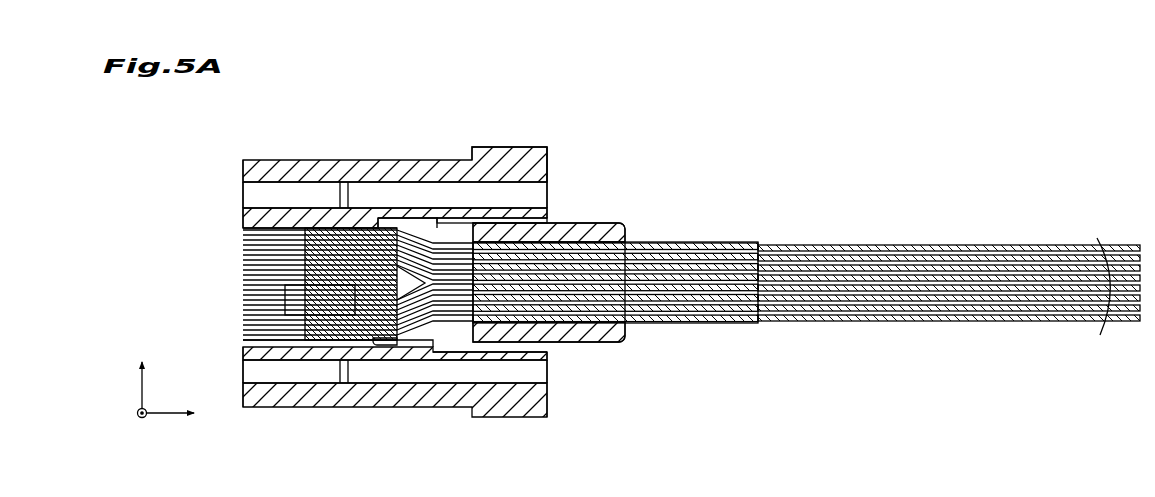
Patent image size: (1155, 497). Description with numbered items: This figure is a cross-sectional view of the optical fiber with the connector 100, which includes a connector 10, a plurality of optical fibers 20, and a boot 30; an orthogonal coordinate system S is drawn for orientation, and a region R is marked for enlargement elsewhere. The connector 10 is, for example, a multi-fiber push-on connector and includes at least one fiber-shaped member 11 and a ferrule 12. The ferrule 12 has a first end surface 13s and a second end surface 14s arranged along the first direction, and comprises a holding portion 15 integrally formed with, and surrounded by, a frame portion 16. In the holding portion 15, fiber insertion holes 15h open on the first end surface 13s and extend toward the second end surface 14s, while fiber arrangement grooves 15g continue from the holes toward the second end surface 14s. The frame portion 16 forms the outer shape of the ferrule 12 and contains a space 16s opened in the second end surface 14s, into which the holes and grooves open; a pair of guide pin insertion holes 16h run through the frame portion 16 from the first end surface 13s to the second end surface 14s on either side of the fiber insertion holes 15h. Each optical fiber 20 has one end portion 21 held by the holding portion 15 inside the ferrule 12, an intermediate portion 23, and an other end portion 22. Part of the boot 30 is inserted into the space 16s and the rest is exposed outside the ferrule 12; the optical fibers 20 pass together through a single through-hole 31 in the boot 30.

The optical fiber with the connector 100 is at (1037, 145).
The connector 10 is at (427, 134).
The fiber-shaped member 11 is at (243, 298).
The ferrule 12 is at (509, 149).
The first end surface 13s is at (243, 163).
The second end surface 14s is at (548, 165).
The holding portion 15 is at (357, 213).
The fiber arrangement groove 15g is at (373, 228).
The fiber insertion hole 15h is at (243, 237).
The frame portion 16 is at (447, 165).
The guide pin insertion hole 16h is at (290, 183).
The space 16s is at (457, 338).
The optical fiber 20 is at (1100, 236).
The one end portion 21 is at (413, 338).
The other end portion 22 is at (912, 236).
The intermediate portion 23 is at (697, 233).
The boot 30 is at (598, 333).
The through-hole 31 is at (602, 253).
The region R is at (335, 338).
The orthogonal coordinate system S is at (142, 388).